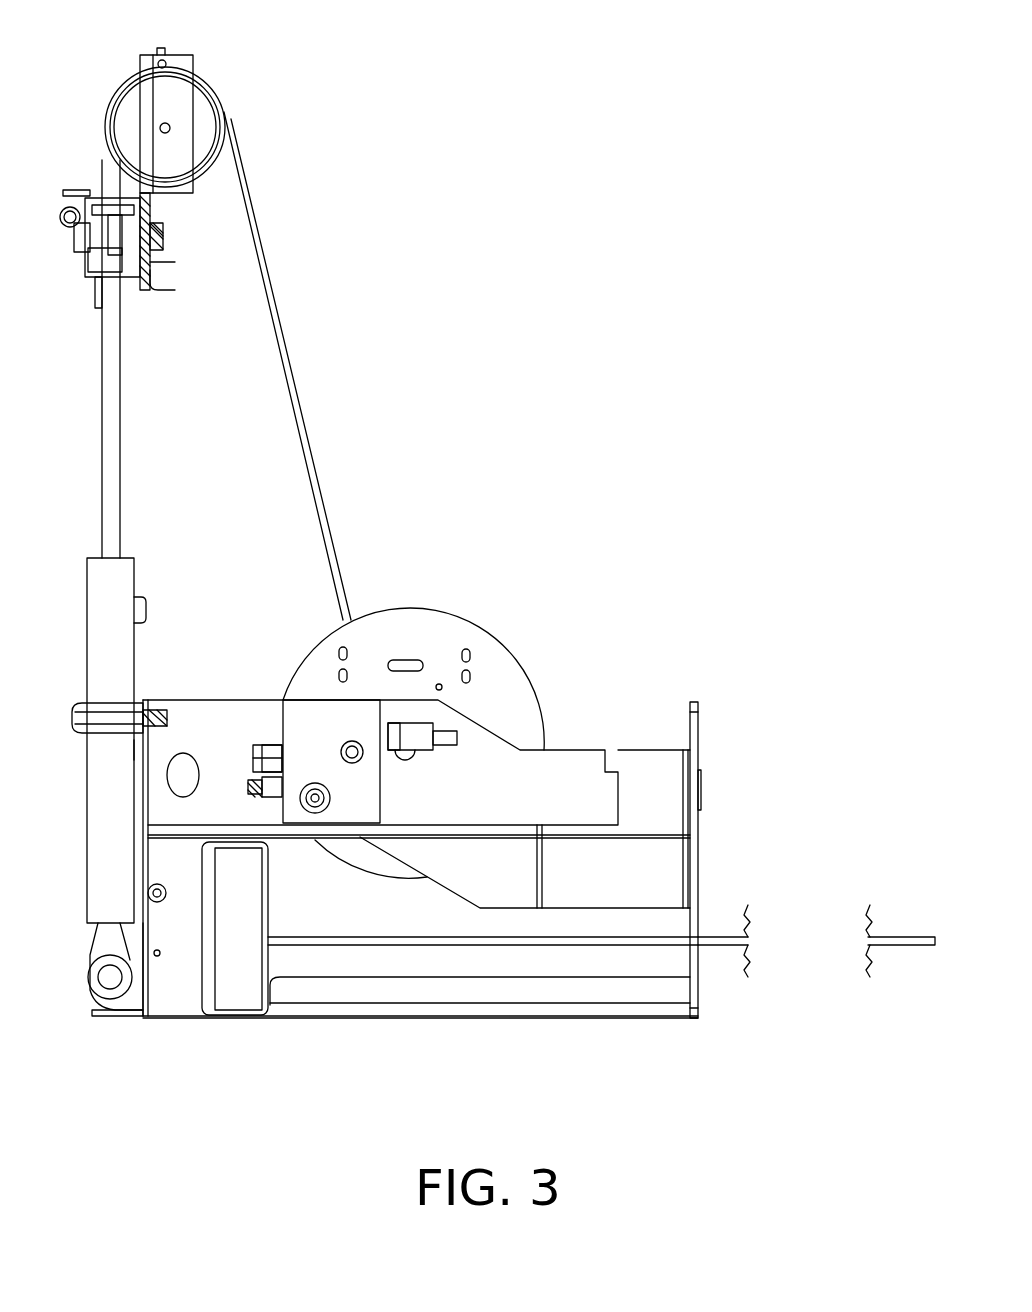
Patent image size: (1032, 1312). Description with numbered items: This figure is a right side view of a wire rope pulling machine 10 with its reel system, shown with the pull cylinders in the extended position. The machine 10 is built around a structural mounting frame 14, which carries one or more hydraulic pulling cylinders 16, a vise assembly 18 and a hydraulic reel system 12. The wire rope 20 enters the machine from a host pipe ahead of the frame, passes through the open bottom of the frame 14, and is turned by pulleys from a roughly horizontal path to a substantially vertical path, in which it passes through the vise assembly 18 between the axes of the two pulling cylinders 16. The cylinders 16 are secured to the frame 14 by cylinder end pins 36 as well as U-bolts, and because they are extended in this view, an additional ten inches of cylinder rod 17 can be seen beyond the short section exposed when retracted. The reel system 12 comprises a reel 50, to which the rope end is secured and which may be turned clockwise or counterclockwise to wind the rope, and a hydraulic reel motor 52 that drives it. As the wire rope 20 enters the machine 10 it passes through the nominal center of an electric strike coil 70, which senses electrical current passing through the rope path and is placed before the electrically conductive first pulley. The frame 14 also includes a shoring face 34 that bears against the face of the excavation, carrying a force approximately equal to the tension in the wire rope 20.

The wire rope pulling machine 10 is at (538, 297).
The hydraulic reel system 12 is at (497, 708).
The structural mounting frame 14 is at (640, 770).
The hydraulic pulling cylinders 16 is at (99, 607).
The cylinder rod 17 is at (112, 388).
The vise assembly 18 is at (90, 258).
The wire rope 20 is at (917, 937).
The shoring face 34 is at (697, 853).
The cylinder end pins 36 is at (110, 977).
The reel 50 is at (440, 625).
The hydraulic reel motor 52 is at (348, 800).
The electric strike coil 70 is at (243, 992).